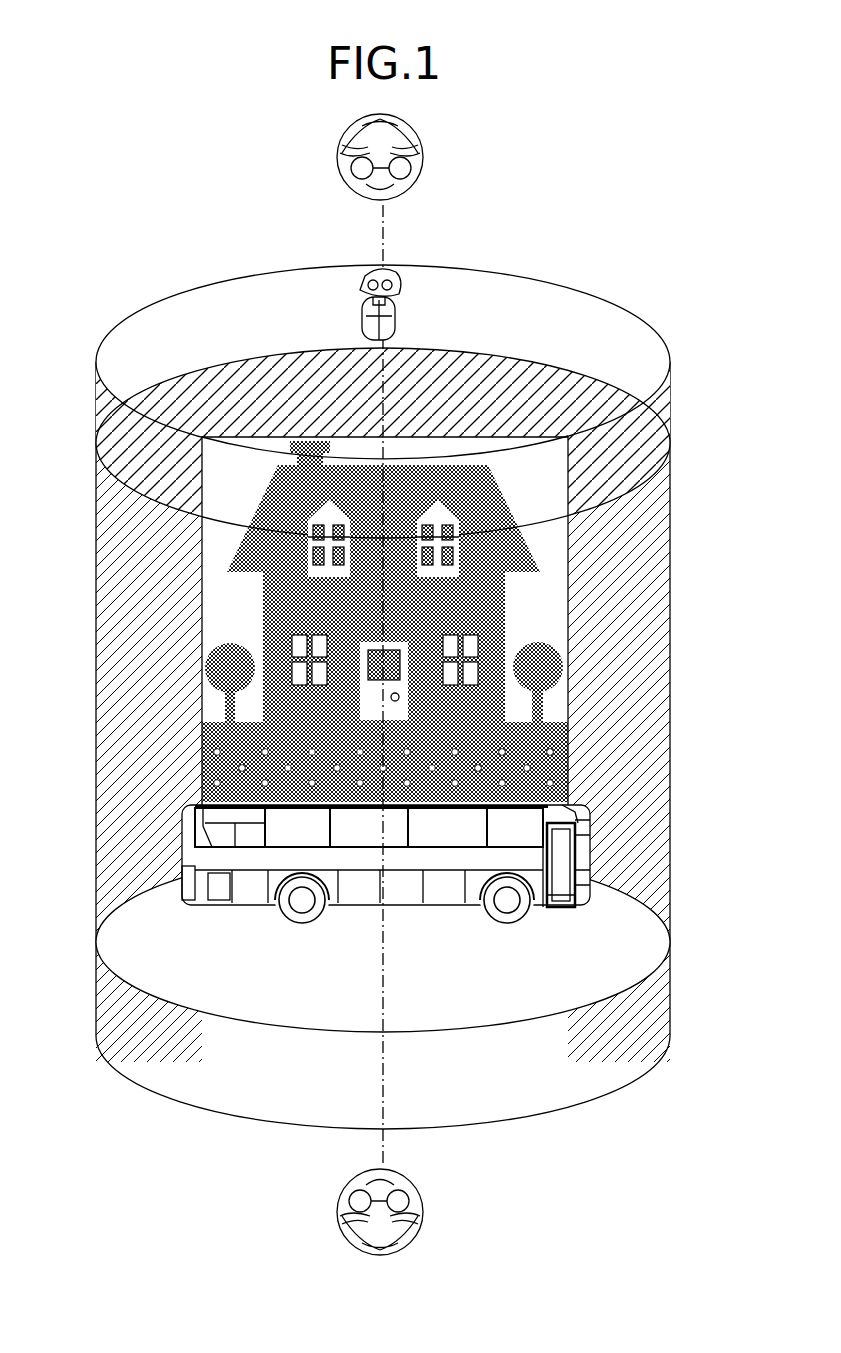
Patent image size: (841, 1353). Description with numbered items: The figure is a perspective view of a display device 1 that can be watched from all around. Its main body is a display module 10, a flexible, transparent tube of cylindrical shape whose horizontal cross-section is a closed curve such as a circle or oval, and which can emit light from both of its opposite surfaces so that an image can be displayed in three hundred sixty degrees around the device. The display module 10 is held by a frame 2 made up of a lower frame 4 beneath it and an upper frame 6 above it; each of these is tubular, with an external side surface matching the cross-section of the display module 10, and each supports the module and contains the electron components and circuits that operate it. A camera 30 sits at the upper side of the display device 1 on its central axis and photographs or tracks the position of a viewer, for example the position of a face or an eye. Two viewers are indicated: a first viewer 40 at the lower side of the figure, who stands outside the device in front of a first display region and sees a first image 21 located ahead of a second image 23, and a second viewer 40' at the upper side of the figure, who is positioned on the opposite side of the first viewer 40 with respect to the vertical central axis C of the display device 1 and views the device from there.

The display device 1 is at (688, 230).
The frame 2 is at (606, 213).
The lower frame 4 is at (660, 1008).
The upper frame 6 is at (660, 402).
The display module 10 is at (688, 531).
The first image 21 is at (246, 892).
The second image 23 is at (543, 702).
The camera 30 is at (398, 273).
The first viewer 40 is at (430, 1212).
The second viewer 40' is at (434, 157).
The vertical central axis C is at (383, 243).